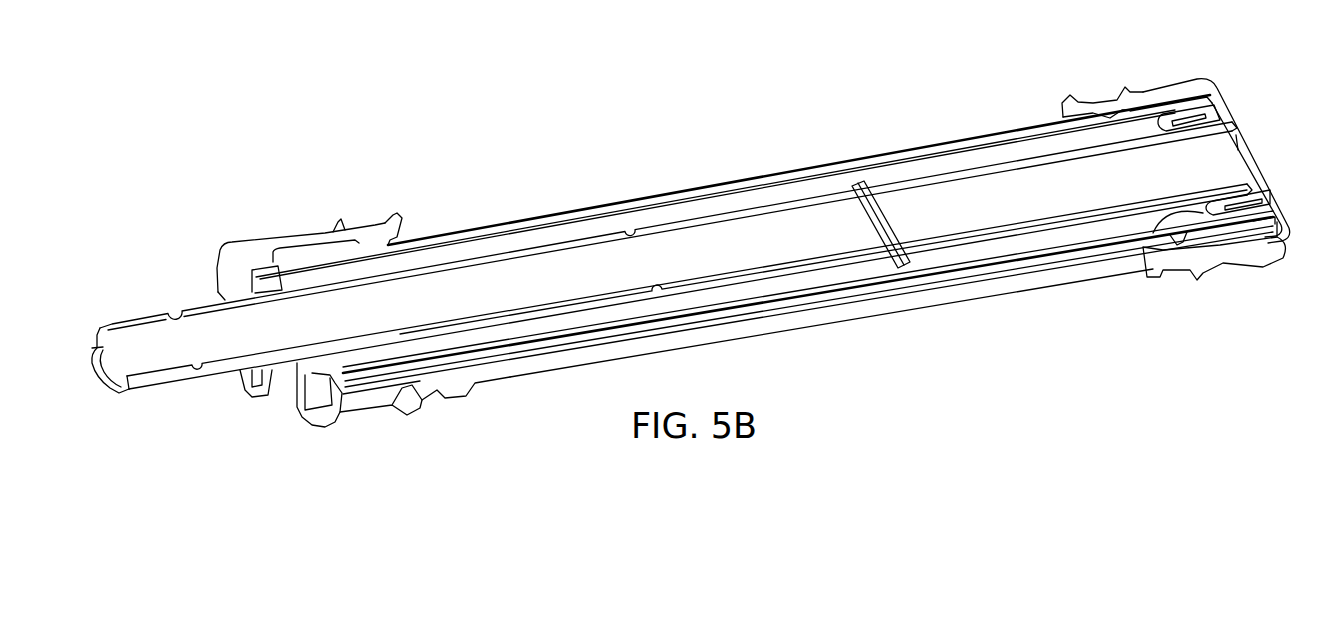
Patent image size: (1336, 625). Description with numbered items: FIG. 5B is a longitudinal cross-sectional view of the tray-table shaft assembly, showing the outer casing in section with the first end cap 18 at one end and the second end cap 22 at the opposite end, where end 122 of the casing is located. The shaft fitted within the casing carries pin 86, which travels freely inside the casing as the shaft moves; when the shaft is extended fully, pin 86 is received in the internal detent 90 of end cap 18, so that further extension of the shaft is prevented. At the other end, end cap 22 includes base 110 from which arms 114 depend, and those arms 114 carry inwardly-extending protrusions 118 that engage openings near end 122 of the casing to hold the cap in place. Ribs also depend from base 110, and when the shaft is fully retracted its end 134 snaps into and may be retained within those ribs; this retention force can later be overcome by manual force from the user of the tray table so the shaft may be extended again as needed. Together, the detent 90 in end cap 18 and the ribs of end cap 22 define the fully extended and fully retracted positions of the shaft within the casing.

The pin 86 is at (858, 183).
The arms 114 is at (1177, 84).
The base 110 is at (1232, 99).
The end 134 is at (1238, 143).
The inwardly-extending protrusions 118 is at (1187, 240).
The second end cap 22 is at (1236, 262).
The end 122 is at (1262, 230).
The internal detent 90 is at (342, 405).
The first end cap 18 is at (368, 412).